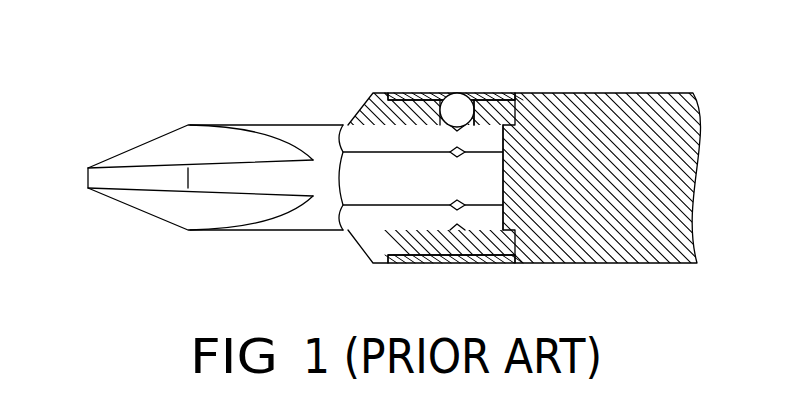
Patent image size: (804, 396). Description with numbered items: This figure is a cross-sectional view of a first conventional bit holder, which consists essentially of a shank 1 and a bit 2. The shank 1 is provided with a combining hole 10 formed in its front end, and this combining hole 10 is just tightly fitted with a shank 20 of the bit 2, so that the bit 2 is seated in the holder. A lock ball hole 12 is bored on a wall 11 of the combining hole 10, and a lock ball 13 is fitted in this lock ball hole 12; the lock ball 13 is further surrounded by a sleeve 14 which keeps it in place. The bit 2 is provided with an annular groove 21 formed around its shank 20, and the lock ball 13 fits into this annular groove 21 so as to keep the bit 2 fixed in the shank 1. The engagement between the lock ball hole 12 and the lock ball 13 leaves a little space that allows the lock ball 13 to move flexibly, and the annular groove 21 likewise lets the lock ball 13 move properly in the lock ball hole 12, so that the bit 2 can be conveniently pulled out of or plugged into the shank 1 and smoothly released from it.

The shank 1 is at (548, 110).
The bit 2 is at (258, 128).
The combining hole 10 is at (340, 119).
The wall 11 is at (420, 98).
The lock ball hole 12 is at (480, 142).
The lock ball 13 is at (458, 103).
The sleeve 14 is at (402, 97).
The shank 20 is at (355, 218).
The annular groove 21 is at (455, 129).